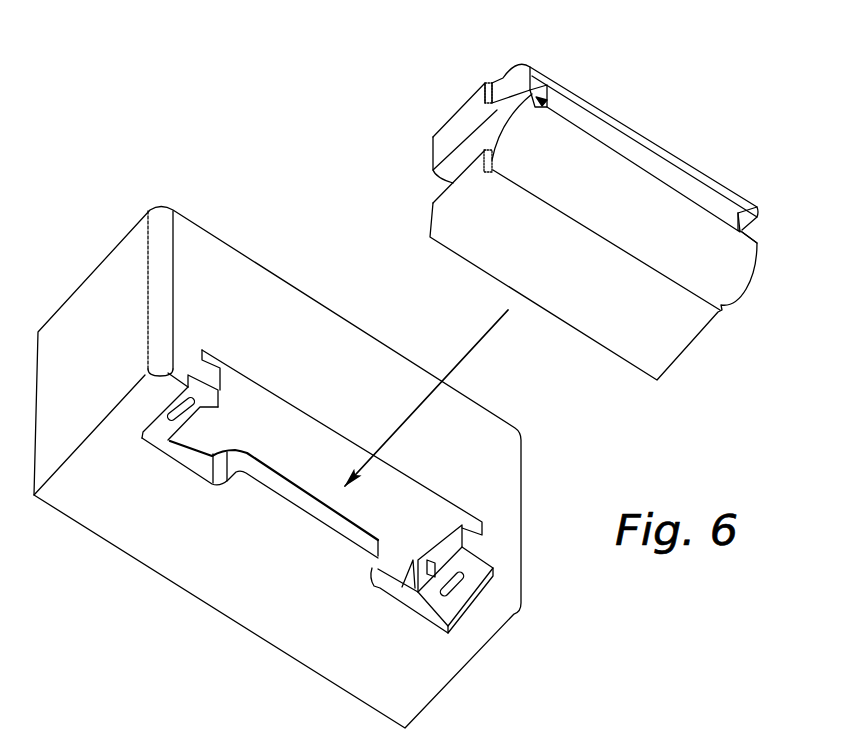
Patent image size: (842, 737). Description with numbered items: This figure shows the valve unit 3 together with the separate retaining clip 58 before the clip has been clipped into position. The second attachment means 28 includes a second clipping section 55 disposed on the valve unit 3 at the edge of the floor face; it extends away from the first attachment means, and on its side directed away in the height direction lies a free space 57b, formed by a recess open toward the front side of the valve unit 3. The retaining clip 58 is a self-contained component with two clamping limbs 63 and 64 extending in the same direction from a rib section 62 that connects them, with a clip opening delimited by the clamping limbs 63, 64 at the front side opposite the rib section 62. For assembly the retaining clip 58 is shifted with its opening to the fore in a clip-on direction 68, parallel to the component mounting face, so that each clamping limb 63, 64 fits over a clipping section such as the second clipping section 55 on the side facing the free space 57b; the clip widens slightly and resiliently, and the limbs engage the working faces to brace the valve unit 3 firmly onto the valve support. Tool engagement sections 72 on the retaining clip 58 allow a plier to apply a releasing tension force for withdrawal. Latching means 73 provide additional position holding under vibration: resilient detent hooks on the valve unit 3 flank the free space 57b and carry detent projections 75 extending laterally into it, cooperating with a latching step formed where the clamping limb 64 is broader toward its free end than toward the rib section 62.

The valve unit 3 is at (110, 302).
The second attachment means 28 is at (268, 445).
The second clipping section 55 is at (278, 502).
The free space 57b is at (402, 562).
The retaining clip 58 is at (694, 348).
The rib section 62 is at (647, 165).
The clamping limb 63 is at (432, 210).
The clamping limb 64 is at (440, 138).
The clip-on direction 68 is at (476, 345).
The tool engagement section 72 is at (540, 98).
The latching means 73 is at (150, 444).
The detent projection 75 is at (492, 86).